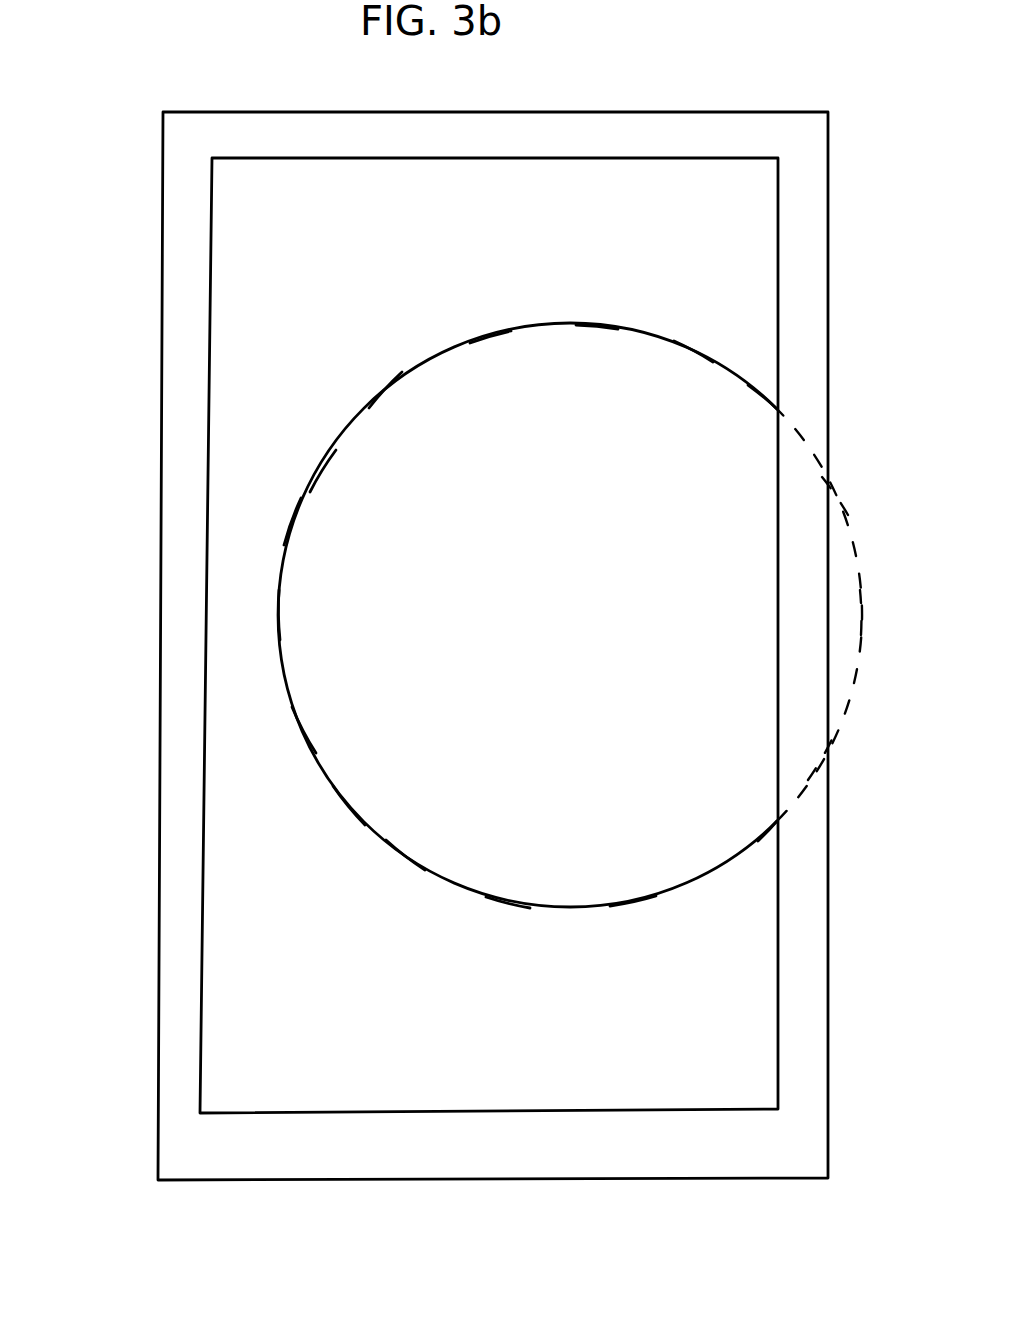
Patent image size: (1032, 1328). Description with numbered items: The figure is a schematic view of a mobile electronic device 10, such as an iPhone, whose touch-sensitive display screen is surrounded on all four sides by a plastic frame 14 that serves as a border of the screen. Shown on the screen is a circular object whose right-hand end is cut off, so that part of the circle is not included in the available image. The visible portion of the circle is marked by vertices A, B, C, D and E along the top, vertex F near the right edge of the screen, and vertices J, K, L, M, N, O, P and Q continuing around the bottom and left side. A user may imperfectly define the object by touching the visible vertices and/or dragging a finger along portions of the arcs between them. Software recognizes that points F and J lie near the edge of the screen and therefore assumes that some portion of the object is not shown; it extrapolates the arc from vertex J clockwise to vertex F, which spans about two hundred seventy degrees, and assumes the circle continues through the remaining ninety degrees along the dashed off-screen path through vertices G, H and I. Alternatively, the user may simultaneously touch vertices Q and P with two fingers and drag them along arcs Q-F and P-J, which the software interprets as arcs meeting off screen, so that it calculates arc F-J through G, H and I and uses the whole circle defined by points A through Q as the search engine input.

The mobile electronic device 10 is at (107, 1185).
The plastic frame 14 is at (185, 800).
The vertex A is at (322, 470).
The vertex B is at (385, 390).
The vertex C is at (490, 335).
The vertex D is at (597, 325).
The vertex E is at (693, 350).
The vertex F is at (775, 401).
The vertex G is at (835, 490).
The vertex H is at (862, 608).
The vertex I is at (826, 770).
The vertex J is at (778, 822).
The vertex K is at (635, 902).
The vertex L is at (508, 900).
The vertex M is at (405, 855).
The vertex N is at (348, 805).
The vertex O is at (303, 730).
The vertex P is at (280, 612).
The vertex Q is at (292, 522).